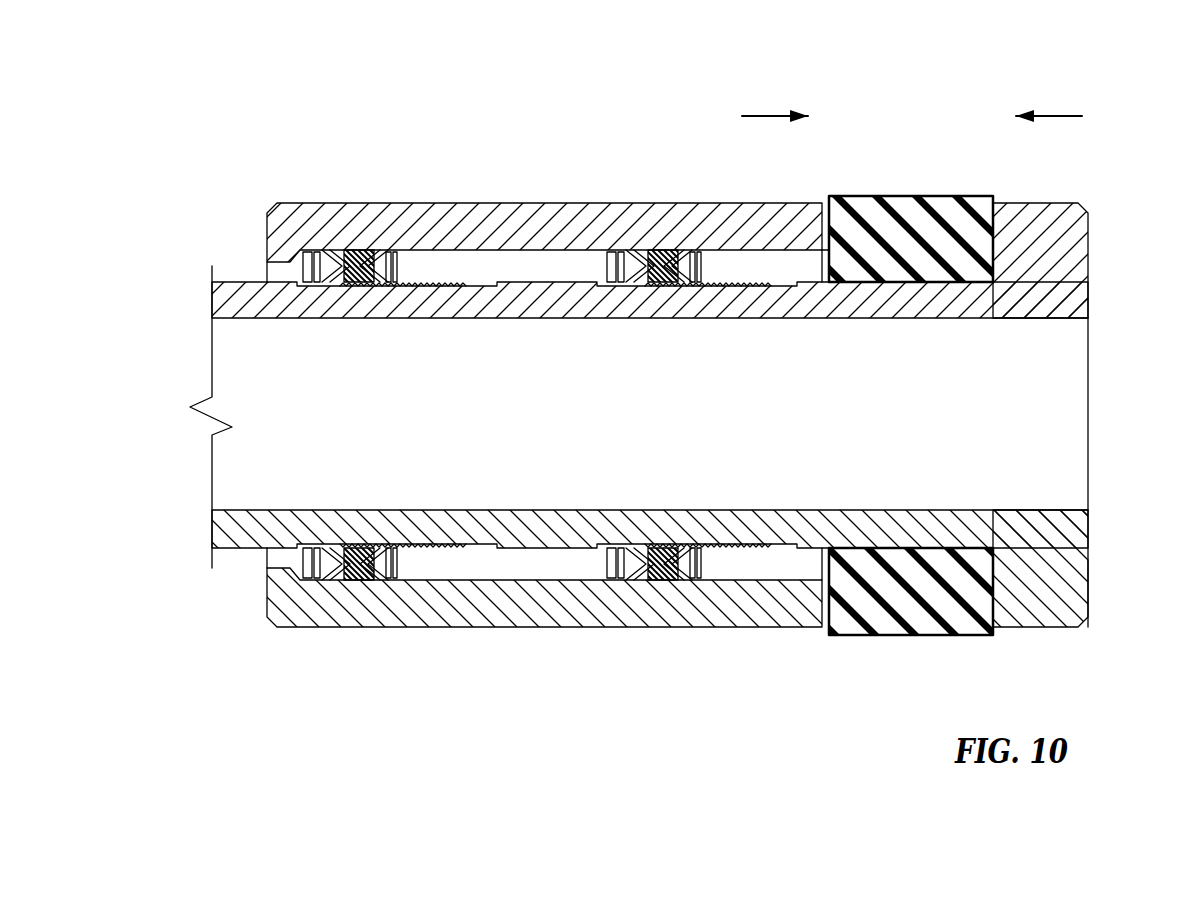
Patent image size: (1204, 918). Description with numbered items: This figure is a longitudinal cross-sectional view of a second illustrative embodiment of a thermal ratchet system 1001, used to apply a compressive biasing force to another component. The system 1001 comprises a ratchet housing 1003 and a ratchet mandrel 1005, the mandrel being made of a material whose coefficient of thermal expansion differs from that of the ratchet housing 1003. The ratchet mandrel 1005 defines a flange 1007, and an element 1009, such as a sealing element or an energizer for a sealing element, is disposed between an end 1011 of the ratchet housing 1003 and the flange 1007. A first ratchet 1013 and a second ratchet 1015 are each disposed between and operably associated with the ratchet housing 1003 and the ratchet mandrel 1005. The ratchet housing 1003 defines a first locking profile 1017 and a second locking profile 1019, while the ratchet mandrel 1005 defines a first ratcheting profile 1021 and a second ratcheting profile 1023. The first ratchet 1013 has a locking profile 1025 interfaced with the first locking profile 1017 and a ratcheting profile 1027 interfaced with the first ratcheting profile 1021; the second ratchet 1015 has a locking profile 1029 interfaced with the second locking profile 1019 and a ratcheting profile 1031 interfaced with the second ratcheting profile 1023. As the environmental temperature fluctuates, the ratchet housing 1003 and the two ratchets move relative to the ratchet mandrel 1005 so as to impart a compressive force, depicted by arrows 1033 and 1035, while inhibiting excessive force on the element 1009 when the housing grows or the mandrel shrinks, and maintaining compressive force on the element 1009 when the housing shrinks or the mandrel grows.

The thermal ratchet system 1001 is at (355, 130).
The ratchet housing 1003 is at (355, 193).
The ratchet mandrel 1005 is at (1086, 190).
The flange 1007 is at (1086, 601).
The element 1009 is at (905, 203).
The end of ratchet housing 1011 is at (832, 200).
The first ratchet 1013 is at (322, 554).
The second ratchet 1015 is at (620, 558).
The first locking profile 1017 is at (310, 266).
The second locking profile 1019 is at (604, 262).
The first ratcheting profile 1021 is at (428, 284).
The second ratcheting profile 1023 is at (731, 284).
The locking profile 1025 is at (366, 262).
The ratcheting profile 1027 is at (345, 262).
The locking profile 1029 is at (676, 246).
The ratcheting profile 1031 is at (648, 262).
The arrow 1033 is at (760, 116).
The arrow 1035 is at (1037, 116).